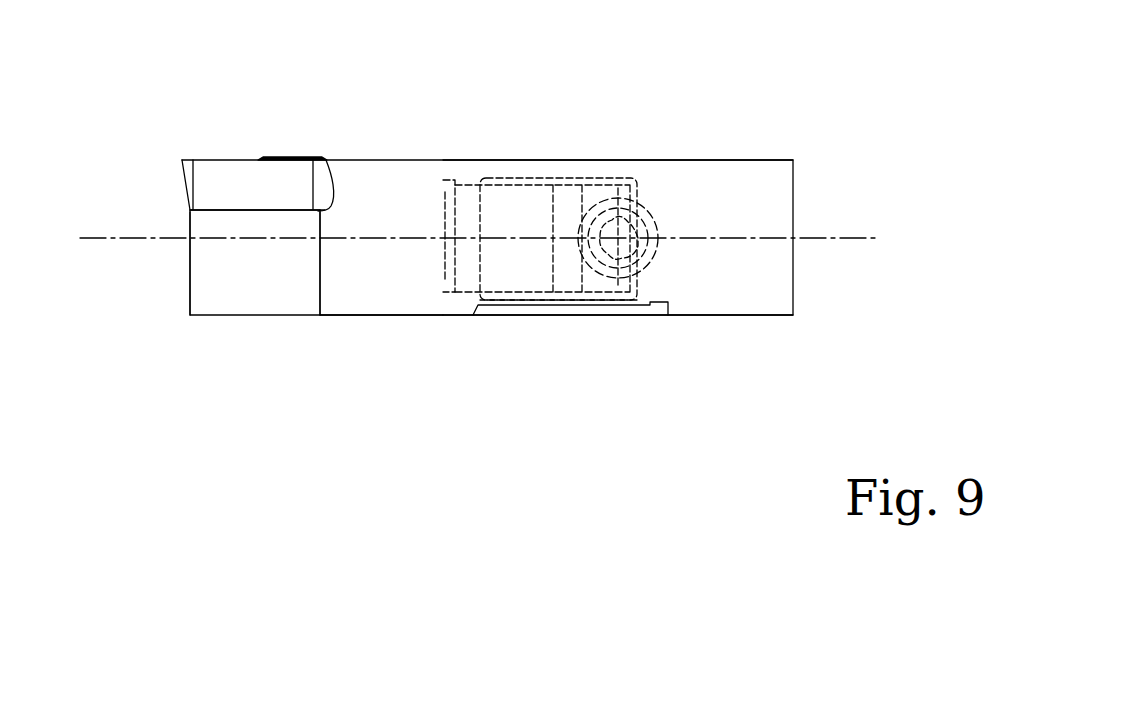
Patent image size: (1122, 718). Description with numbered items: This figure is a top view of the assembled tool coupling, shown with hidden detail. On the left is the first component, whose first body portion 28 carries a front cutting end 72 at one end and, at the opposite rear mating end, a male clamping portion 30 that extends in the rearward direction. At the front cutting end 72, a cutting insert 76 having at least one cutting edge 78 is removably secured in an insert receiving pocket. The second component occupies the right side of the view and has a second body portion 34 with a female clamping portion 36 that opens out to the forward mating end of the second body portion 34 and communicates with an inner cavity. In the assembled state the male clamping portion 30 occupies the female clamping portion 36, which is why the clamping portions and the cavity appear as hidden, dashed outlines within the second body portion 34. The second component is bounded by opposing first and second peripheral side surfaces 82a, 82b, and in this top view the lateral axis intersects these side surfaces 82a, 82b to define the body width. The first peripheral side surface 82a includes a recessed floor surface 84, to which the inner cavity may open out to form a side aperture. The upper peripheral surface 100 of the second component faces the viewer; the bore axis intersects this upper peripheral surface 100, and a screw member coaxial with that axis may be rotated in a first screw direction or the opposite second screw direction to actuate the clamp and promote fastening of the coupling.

The first body portion 28 is at (343, 288).
The male clamping portion 30 is at (527, 278).
The second body portion 34 is at (712, 265).
The female clamping portion 36 is at (508, 300).
The front cutting end 72 is at (223, 290).
The cutting insert 76 is at (247, 180).
The cutting edge 78 is at (213, 160).
The first peripheral side surface 82a is at (600, 317).
The second peripheral side surface 82b is at (610, 160).
The recessed floor surface 84 is at (650, 310).
The upper peripheral surface 100 is at (771, 224).